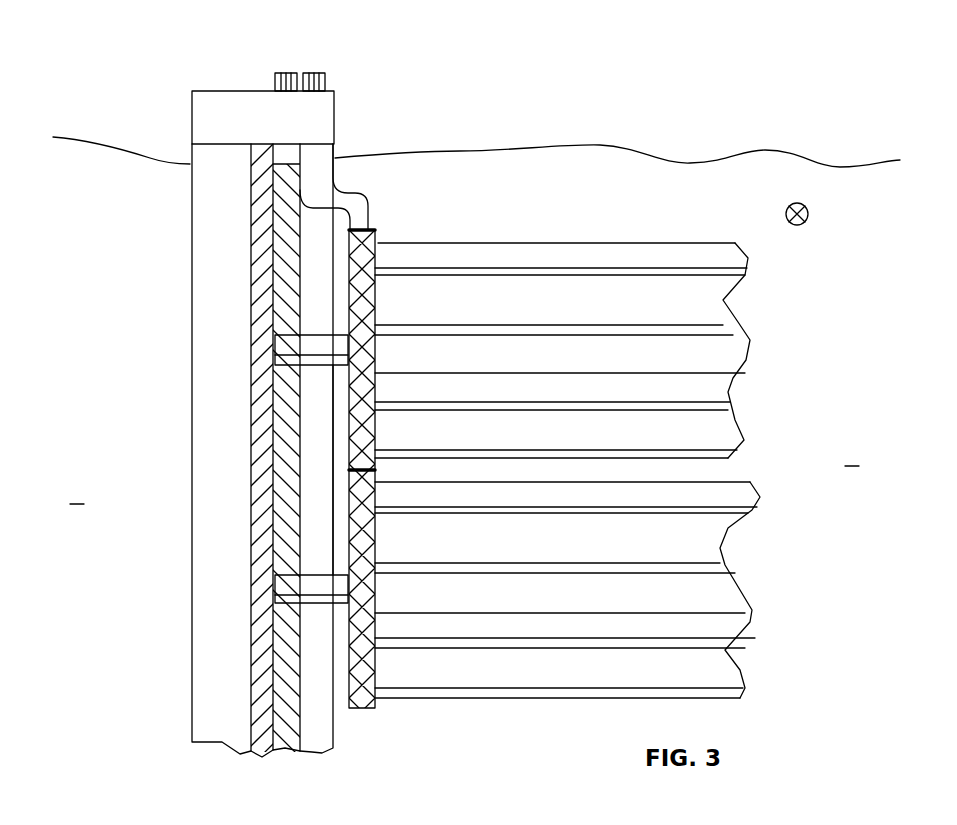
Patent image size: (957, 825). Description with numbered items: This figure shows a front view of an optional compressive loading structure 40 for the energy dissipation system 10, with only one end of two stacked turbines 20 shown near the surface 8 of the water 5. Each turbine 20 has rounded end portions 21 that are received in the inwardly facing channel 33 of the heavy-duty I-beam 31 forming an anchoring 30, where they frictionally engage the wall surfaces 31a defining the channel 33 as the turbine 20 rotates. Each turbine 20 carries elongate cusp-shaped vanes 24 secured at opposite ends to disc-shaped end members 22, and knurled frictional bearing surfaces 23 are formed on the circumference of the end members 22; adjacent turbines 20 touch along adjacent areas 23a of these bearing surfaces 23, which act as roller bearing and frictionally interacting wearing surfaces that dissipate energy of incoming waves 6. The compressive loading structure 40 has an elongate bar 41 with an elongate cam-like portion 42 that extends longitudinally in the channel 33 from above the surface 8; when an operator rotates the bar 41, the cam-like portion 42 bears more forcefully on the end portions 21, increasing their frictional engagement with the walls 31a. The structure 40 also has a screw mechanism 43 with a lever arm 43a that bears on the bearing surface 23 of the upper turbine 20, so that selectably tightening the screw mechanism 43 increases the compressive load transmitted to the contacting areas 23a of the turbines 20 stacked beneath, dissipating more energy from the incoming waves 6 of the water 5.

The water 5 is at (465, 473).
The incoming waves 6 is at (809, 213).
The surface of water 8 is at (643, 150).
The energy dissipation system 10 is at (148, 276).
The turbine 20 is at (621, 442).
The rounded end portion 21 is at (283, 346).
The disc-shaped end member 22 is at (340, 401).
The knurled frictional bearing surface 23 is at (363, 253).
The adjacent areas of bearing surfaces 23a is at (413, 541).
The cusp-shaped vane 24 is at (635, 325).
The anchoring 30 is at (293, 458).
The I-beam 31 is at (201, 618).
The wall surface 31a is at (322, 295).
The channel 33 is at (328, 731).
The compressive loading structure 40 is at (233, 85).
The elongate bar 41 is at (279, 73).
The cam-like portion 42 is at (280, 218).
The screw mechanism 43 is at (313, 73).
The lever arm 43a is at (352, 192).